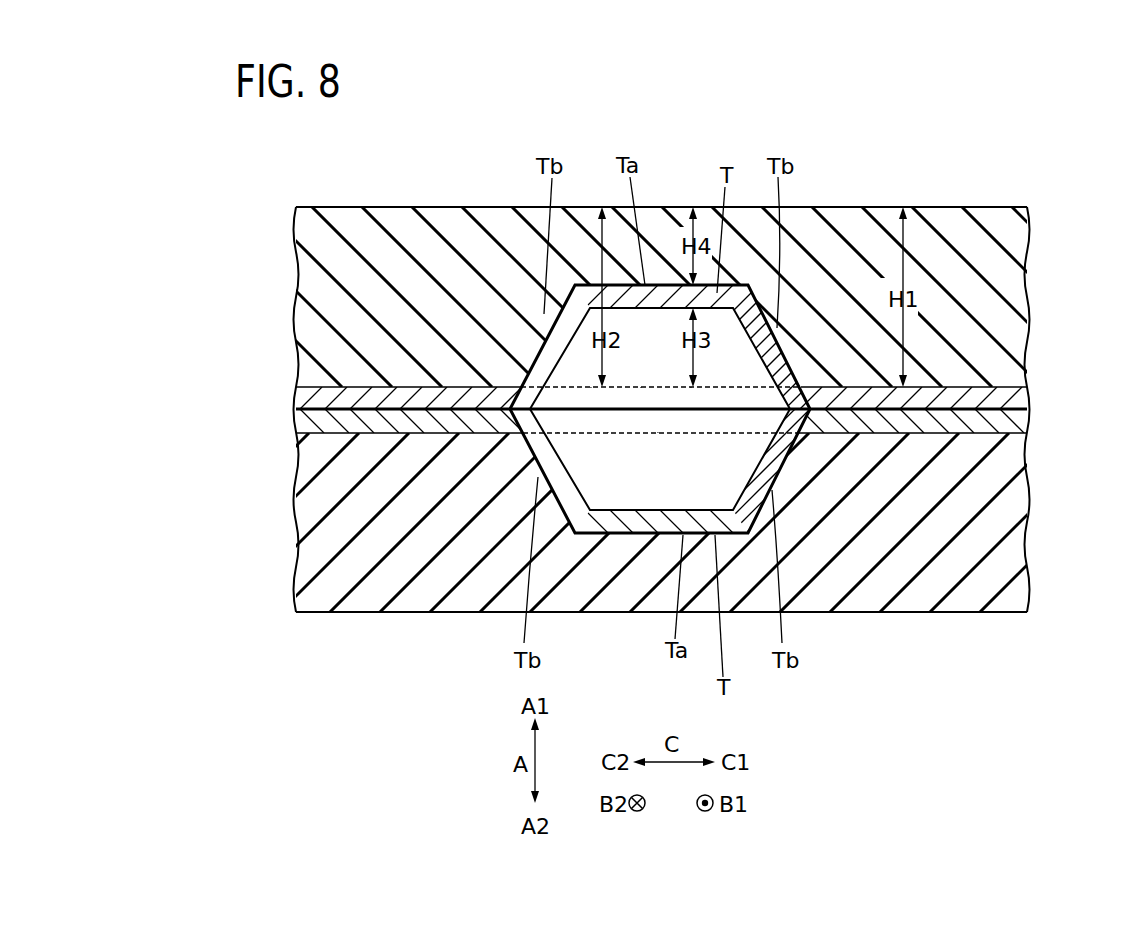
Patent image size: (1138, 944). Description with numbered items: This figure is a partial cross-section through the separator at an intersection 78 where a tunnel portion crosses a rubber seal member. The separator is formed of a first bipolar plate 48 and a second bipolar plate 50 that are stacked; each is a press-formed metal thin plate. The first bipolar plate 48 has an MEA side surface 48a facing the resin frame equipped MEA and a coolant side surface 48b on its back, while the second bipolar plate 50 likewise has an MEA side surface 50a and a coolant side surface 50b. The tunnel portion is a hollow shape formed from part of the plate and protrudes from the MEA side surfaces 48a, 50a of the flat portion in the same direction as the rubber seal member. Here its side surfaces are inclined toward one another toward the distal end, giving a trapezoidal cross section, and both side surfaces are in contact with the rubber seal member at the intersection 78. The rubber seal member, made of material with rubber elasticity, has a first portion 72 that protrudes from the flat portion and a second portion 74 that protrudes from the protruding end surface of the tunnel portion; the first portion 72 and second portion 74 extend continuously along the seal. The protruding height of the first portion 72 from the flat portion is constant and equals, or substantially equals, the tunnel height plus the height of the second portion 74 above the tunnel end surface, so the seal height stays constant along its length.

The first portion 72 is at (402, 232).
The second portion 74 is at (663, 227).
The intersection 78 is at (598, 173).
The first bipolar plate 48 is at (323, 420).
The MEA side surface 48a is at (310, 433).
The coolant side surface 48b is at (306, 387).
The second bipolar plate 50 is at (1000, 402).
The MEA side surface 50a is at (1018, 387).
The coolant side surface 50b is at (1014, 433).